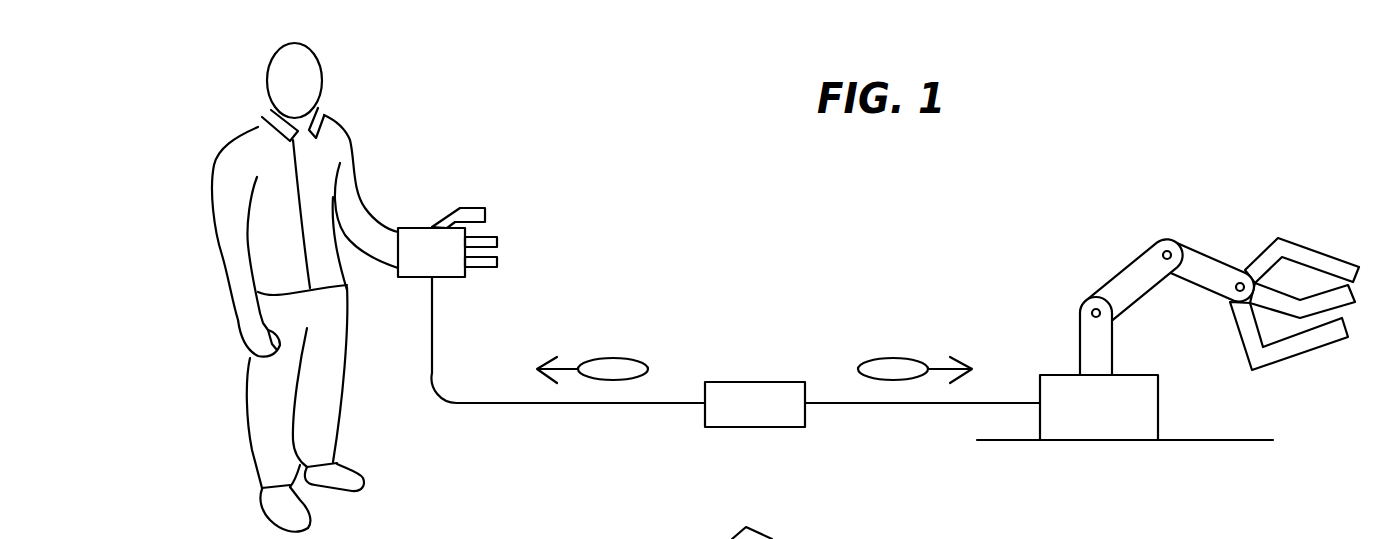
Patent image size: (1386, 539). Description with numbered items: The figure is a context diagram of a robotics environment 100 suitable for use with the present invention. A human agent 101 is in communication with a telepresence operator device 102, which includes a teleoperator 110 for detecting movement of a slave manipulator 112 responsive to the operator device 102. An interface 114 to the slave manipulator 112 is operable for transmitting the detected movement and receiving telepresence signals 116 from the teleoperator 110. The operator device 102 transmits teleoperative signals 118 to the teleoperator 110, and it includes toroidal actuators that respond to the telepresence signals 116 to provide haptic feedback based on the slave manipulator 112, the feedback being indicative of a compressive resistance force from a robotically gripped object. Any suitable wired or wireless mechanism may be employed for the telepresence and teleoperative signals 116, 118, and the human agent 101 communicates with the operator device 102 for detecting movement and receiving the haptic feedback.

The robotics environment 100 is at (954, 194).
The human agent 101 is at (267, 93).
The telepresence operator device 102 is at (476, 172).
The teleoperator 110 is at (451, 260).
The slave manipulator 112 is at (1078, 418).
The interface 114 is at (751, 397).
The telepresence signals 116 is at (610, 370).
The teleoperative signals 118 is at (891, 368).